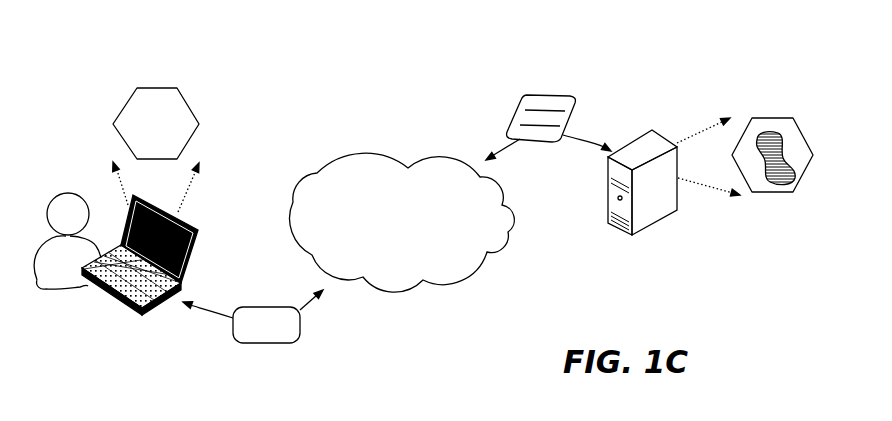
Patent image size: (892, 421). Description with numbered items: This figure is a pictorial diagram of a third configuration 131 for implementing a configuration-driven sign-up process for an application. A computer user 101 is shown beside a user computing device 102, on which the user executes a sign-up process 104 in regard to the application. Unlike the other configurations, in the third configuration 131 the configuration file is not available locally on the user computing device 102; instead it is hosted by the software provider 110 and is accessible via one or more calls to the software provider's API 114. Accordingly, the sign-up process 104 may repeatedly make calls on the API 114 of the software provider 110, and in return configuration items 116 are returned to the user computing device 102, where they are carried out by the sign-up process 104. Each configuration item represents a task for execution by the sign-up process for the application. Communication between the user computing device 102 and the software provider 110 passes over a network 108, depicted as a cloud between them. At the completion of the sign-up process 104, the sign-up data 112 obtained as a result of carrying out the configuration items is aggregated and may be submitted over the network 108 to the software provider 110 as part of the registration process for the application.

The computer user 101 is at (68, 192).
The user computing device 102 is at (108, 305).
The sign-up process 104 is at (140, 88).
The network 108 is at (402, 222).
The software provider 110 is at (643, 130).
The sign-up data 112 is at (267, 338).
The API 114 is at (772, 118).
The configuration items 116 is at (520, 95).
The third configuration 131 is at (352, 100).